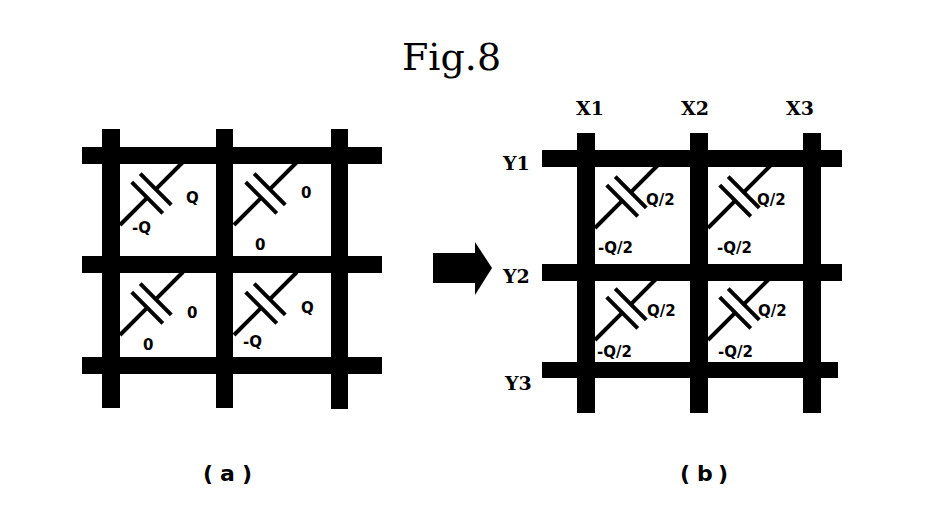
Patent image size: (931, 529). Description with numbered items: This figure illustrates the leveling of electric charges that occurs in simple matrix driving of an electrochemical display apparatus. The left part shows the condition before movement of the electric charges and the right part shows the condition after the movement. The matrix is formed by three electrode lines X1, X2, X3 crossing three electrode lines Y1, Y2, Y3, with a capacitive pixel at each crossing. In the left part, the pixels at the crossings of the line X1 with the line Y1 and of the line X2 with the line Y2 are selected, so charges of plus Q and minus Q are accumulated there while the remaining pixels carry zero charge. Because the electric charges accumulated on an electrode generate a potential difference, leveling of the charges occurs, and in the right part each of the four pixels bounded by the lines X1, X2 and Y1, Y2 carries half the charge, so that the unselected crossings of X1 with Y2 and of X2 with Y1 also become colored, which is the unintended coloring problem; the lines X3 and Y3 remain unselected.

The column electrode line X1 is at (115, 252).
The column electrode line X2 is at (222, 252).
The column electrode line X3 is at (331, 253).
The row electrode line Y1 is at (211, 152).
The row electrode line Y2 is at (212, 263).
The row electrode line Y3 is at (212, 368).